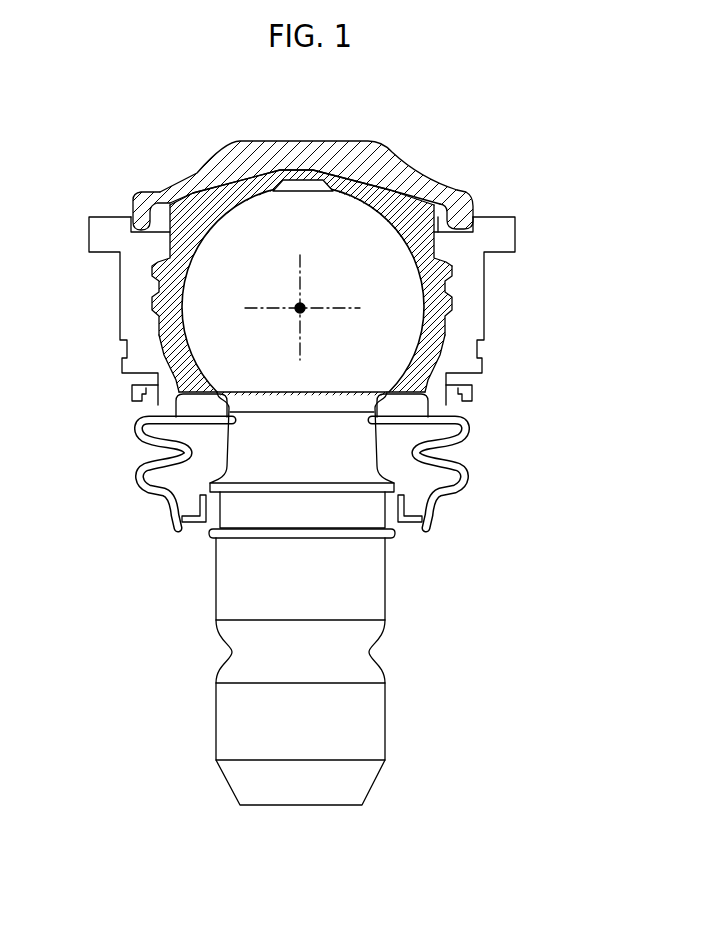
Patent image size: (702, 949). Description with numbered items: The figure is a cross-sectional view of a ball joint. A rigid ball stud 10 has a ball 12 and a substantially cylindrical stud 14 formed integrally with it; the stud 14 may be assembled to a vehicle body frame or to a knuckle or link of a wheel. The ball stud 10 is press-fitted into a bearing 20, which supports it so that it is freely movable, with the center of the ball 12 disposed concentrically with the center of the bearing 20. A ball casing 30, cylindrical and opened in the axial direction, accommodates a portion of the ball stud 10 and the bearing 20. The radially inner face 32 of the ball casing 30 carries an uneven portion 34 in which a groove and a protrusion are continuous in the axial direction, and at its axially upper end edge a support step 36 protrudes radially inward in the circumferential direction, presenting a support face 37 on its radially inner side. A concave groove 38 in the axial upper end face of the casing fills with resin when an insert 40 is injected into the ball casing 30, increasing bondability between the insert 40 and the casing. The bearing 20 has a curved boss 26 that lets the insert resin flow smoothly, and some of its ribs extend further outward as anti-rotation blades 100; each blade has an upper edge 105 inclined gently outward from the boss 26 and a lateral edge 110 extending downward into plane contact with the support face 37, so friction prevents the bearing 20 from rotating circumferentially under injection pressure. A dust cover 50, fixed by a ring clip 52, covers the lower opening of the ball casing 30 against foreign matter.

The ball stud 10 is at (420, 699).
The ball 12 is at (326, 265).
The stud 14 is at (372, 583).
The bearing 20 is at (157, 288).
The boss 26 is at (275, 172).
The ball casing 30 is at (475, 322).
The radially inner face 32 is at (447, 254).
The uneven portion 34 is at (460, 282).
The support step 36 is at (470, 192).
The support face 37 is at (437, 203).
The concave groove 38 is at (135, 212).
The insert 40 is at (447, 246).
The dust cover 50 is at (467, 473).
The ring clip 52 is at (472, 393).
The anti-rotation blade 100 is at (200, 204).
The upper edge 105 is at (385, 183).
The lateral edge 110 is at (191, 197).